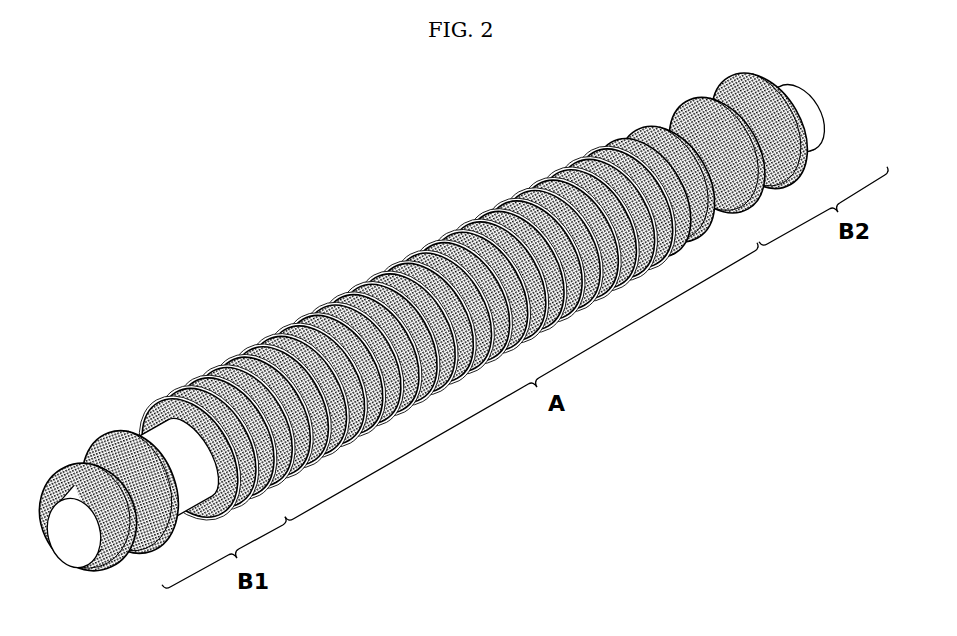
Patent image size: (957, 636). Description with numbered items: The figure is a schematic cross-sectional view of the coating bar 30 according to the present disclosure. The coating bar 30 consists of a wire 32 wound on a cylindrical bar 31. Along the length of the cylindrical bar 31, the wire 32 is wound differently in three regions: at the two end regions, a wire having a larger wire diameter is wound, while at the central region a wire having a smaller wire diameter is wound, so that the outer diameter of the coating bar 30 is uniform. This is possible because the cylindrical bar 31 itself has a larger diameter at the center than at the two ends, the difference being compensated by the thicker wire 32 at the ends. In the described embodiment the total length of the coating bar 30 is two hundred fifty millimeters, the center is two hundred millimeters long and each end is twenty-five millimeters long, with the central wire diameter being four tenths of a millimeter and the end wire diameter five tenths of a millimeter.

The coating bar 30 is at (311, 163).
The cylindrical bar 31 is at (72, 549).
The wire 32 is at (193, 406).